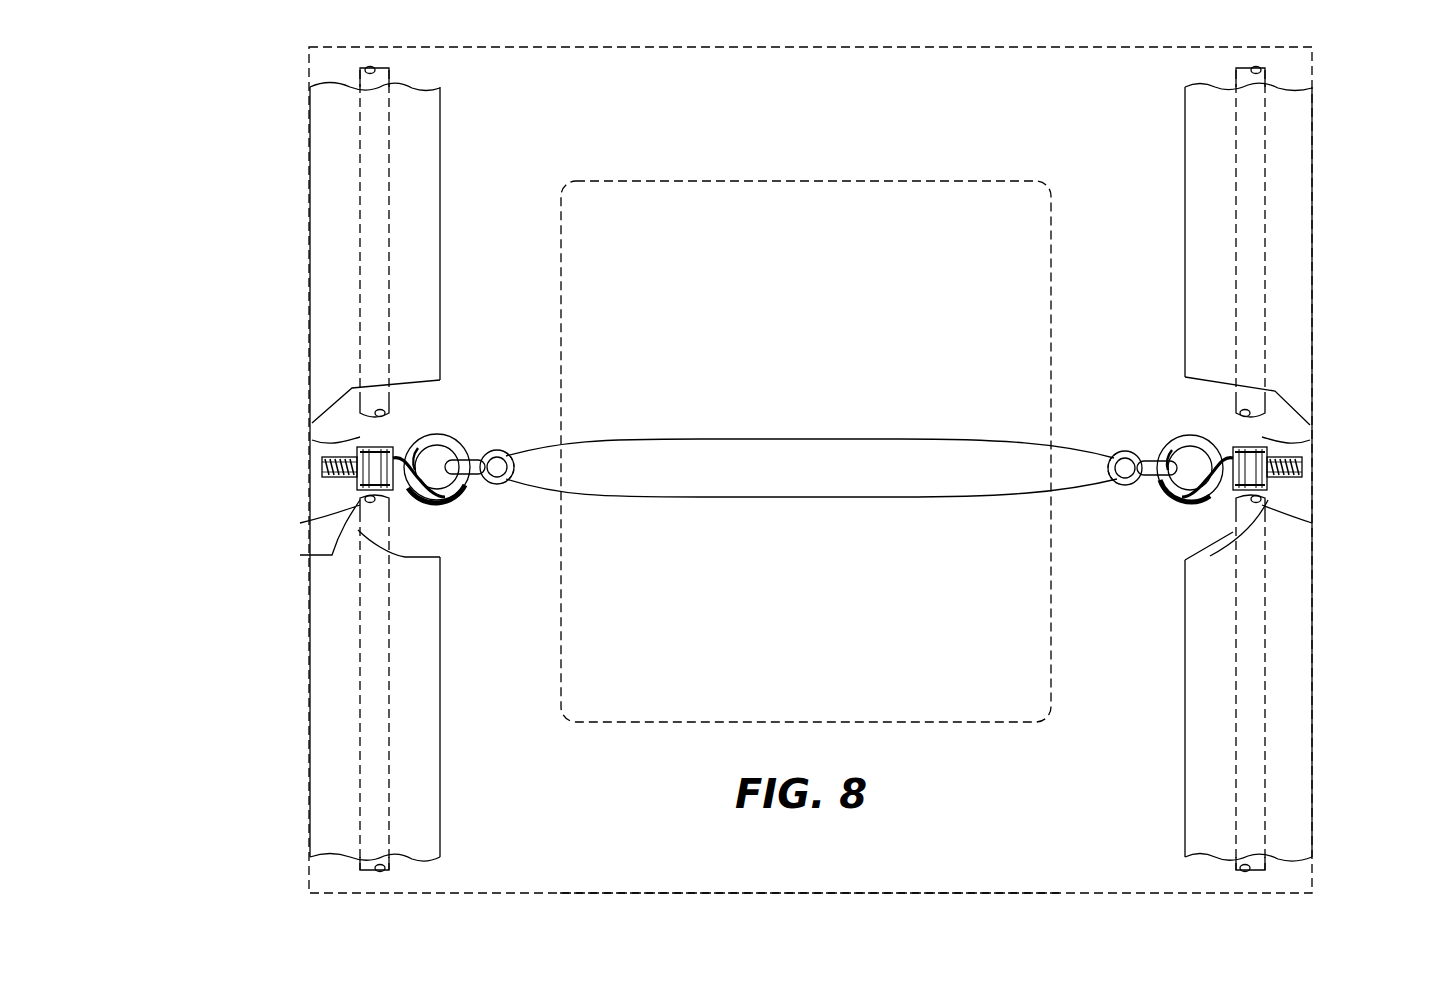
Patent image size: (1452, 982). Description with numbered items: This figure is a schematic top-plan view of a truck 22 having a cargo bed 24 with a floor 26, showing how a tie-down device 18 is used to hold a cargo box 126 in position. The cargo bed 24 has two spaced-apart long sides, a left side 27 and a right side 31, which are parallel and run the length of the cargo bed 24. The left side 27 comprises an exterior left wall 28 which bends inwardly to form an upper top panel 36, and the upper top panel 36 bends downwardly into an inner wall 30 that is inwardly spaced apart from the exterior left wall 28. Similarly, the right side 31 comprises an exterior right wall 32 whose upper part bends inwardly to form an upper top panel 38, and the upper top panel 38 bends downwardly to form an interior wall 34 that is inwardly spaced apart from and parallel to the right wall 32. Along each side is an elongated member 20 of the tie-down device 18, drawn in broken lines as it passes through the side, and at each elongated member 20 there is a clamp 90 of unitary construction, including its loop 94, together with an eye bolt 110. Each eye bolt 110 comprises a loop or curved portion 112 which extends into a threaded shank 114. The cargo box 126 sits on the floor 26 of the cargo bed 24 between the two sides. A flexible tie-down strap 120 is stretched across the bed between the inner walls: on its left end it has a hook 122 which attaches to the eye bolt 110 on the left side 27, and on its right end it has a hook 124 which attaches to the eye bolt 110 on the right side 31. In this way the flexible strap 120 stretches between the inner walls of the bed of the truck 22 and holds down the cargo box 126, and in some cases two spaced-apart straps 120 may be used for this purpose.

The tie-down device 18 is at (397, 76).
The elongated member 20 is at (360, 435).
The truck 22 is at (308, 70).
The cargo bed 24 is at (712, 893).
The floor 26 is at (678, 804).
The left side 27 is at (335, 263).
The exterior left wall 28 is at (308, 181).
The inner wall 30 is at (443, 183).
The right side 31 is at (1215, 700).
The exterior right wall 32 is at (1316, 233).
The interior wall 34 is at (1185, 122).
The upper top panel 36 is at (343, 345).
The upper top panel 38 is at (1211, 203).
The clamp 90 is at (352, 520).
The loop 94 is at (380, 450).
The eye bolt 110 is at (411, 440).
The curved portion 112 is at (458, 487).
The threaded shank 114 is at (345, 480).
The flexible tie-down strap 120 is at (860, 486).
The hook 122 is at (507, 452).
The hook 124 is at (1132, 485).
The cargo box 126 is at (806, 451).